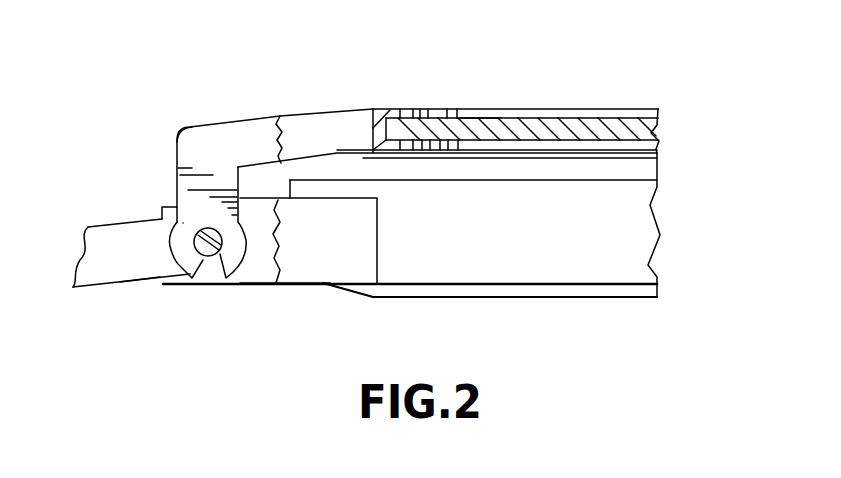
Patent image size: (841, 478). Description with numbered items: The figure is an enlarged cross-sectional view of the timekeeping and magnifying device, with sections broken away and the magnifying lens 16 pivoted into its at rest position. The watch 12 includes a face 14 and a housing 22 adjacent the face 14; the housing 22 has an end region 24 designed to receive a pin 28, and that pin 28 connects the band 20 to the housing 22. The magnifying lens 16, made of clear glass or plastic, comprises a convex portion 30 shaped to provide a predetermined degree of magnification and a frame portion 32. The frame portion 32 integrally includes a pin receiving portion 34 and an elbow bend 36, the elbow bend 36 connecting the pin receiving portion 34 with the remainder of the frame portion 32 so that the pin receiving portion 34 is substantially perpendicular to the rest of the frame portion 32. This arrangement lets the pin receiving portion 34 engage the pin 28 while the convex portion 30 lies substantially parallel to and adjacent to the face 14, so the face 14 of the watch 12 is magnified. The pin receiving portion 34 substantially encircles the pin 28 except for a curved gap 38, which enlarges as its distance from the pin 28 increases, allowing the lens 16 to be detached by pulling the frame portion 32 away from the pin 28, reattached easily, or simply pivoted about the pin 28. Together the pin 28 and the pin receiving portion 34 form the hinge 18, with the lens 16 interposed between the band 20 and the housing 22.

The watch 12 is at (592, 299).
The face 14 is at (638, 157).
The magnifying lens 16 is at (385, 109).
The hinge 18 is at (156, 287).
The band 20 is at (90, 289).
The housing 22 is at (423, 299).
The end region 24 is at (298, 286).
The pin 28 is at (250, 270).
The convex portion 30 is at (476, 110).
The frame portion 32 is at (262, 118).
The pin receiving portion 34 is at (168, 245).
The elbow bend 36 is at (183, 137).
The curved gap 38 is at (208, 287).